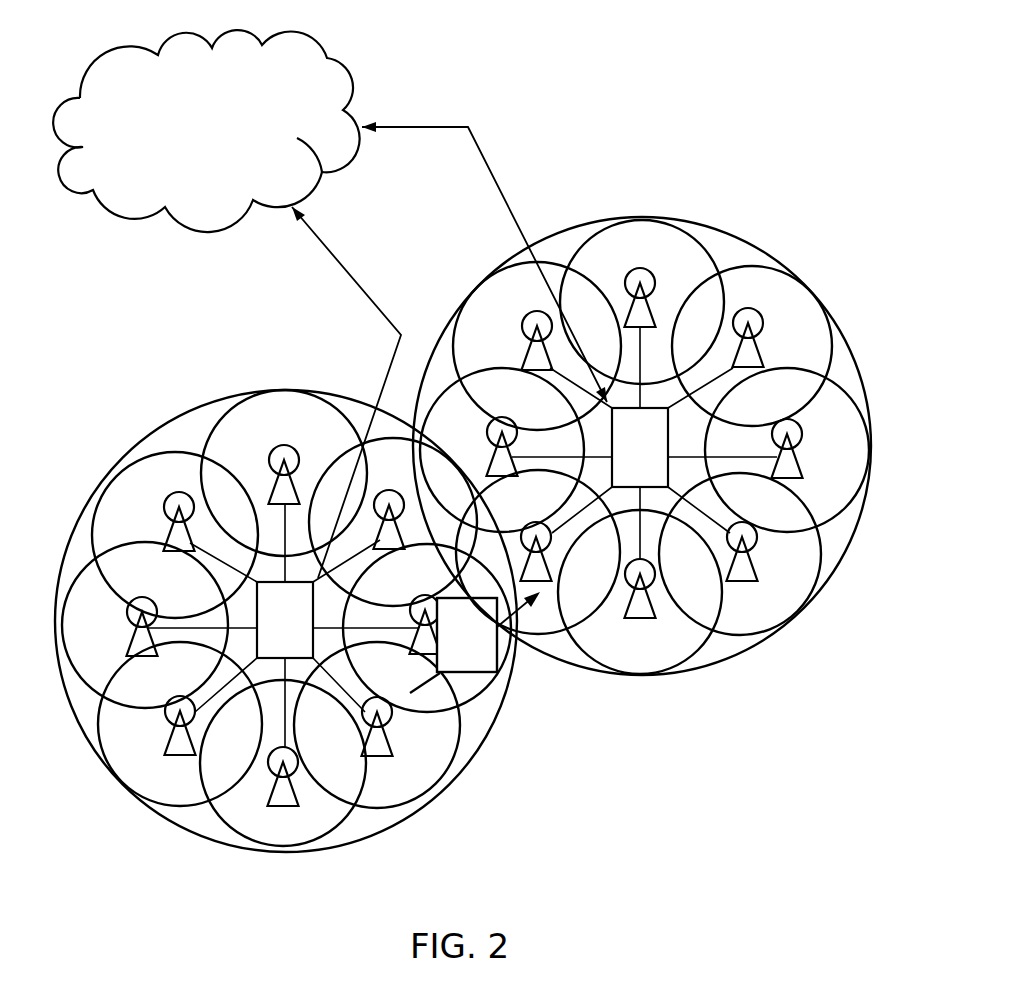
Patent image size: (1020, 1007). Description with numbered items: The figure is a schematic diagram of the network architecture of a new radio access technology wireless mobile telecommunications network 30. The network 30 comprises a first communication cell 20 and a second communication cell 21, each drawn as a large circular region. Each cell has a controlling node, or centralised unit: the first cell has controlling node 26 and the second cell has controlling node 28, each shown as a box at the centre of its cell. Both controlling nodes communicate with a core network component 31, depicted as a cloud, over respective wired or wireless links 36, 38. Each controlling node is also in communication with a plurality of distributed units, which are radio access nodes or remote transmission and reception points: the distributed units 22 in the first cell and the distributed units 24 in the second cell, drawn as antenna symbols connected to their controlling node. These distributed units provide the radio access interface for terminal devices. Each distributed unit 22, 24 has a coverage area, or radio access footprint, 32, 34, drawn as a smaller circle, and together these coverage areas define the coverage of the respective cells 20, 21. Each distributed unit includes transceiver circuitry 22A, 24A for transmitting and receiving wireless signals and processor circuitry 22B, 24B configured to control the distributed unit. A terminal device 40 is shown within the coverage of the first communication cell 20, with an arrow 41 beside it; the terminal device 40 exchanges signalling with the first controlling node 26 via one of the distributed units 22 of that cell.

The first communication cell 20 is at (192, 407).
The second communication cell 21 is at (645, 217).
The distributed units 22 is at (280, 659).
The transceiver circuitry 22A is at (390, 725).
The processor circuitry 22B is at (393, 747).
The distributed units 24 is at (701, 479).
The transceiver circuitry 24A is at (755, 547).
The processor circuitry 24B is at (757, 568).
The controlling node 26 is at (302, 634).
The controlling node 28 is at (657, 462).
The new RAT wireless mobile telecommunications network 30 is at (640, 96).
The core network component 31 is at (228, 136).
The coverage area 32 is at (82, 560).
The coverage area 34 is at (753, 268).
The link 36 is at (344, 271).
The link 38 is at (428, 127).
The terminal device 40 is at (463, 673).
The movement direction arrow 41 is at (541, 603).